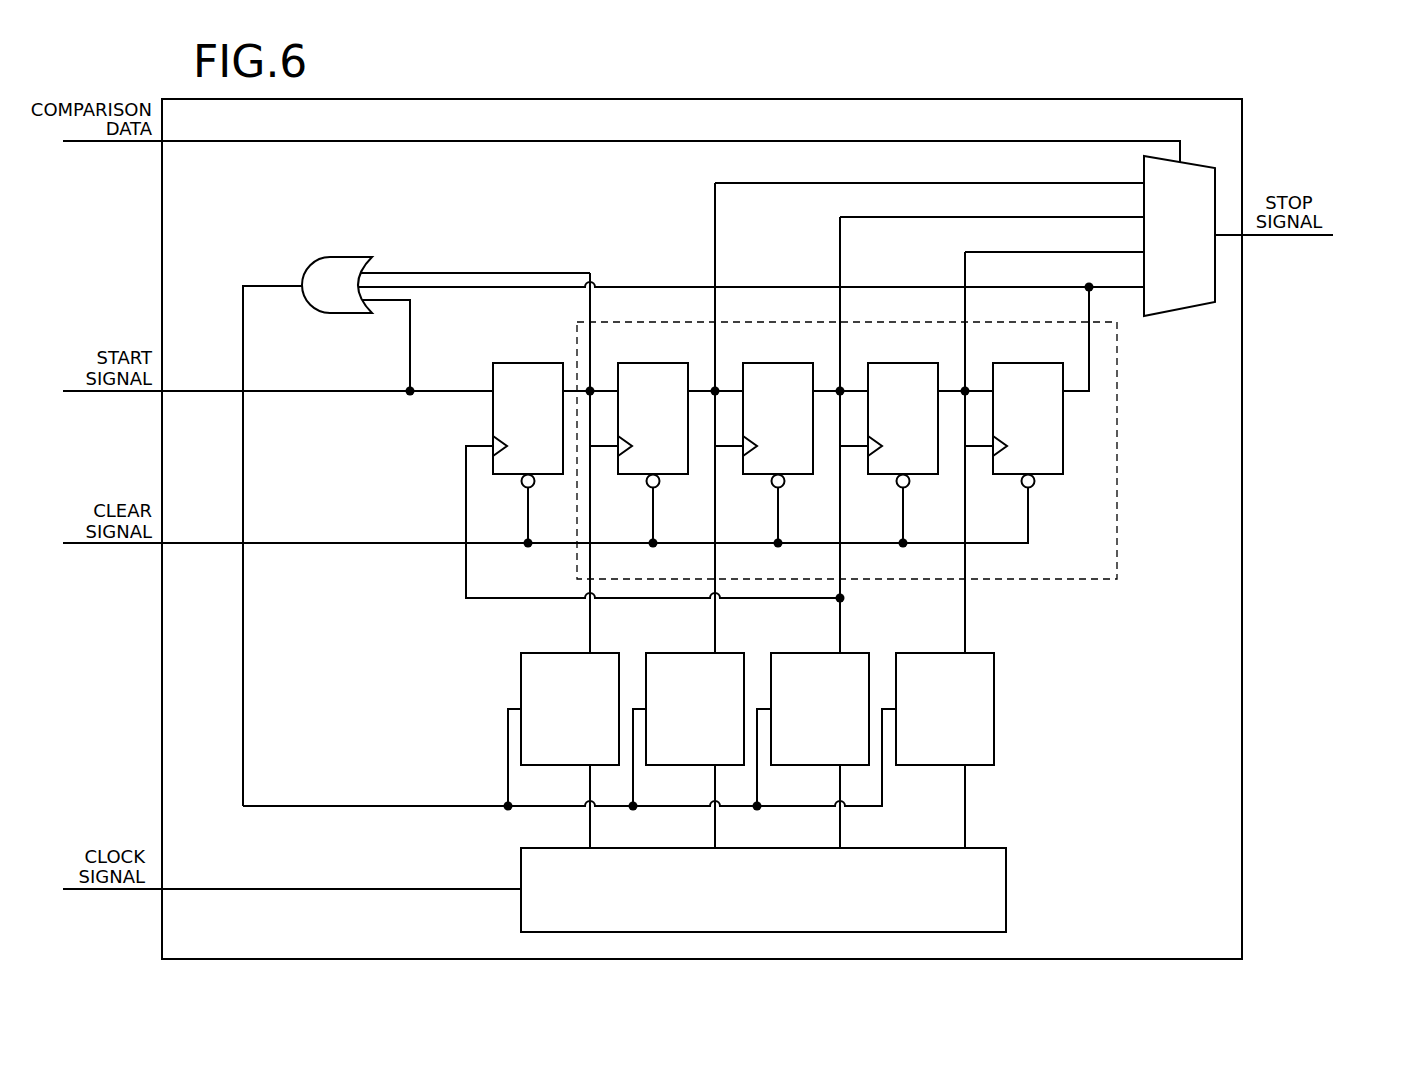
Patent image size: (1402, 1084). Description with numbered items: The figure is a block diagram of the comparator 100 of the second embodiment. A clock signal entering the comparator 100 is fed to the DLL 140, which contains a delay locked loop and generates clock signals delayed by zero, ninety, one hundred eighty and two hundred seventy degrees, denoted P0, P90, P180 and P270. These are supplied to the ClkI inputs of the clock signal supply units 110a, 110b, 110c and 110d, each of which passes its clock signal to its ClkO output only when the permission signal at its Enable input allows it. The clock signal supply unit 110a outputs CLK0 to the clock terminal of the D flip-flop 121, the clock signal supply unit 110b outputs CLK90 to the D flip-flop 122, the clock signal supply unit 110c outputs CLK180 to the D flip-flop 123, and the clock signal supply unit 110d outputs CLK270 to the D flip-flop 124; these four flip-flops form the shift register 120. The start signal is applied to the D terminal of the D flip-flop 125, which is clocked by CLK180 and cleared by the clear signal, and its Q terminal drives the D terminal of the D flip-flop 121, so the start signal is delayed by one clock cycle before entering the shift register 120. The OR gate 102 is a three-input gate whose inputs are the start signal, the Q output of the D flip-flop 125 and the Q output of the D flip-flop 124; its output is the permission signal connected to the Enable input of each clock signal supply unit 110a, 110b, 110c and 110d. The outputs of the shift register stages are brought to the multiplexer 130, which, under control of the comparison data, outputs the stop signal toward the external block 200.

The comparator 100 is at (753, 99).
The OR gate 102 is at (349, 257).
The clock signal supply unit 110a is at (569, 766).
The clock signal supply unit 110b is at (694, 766).
The clock signal supply unit 110c is at (819, 766).
The clock signal supply unit 110d is at (944, 766).
The shift register 120 is at (1074, 581).
The D flip-flop 121 is at (642, 362).
The D flip-flop 122 is at (767, 362).
The D flip-flop 123 is at (892, 362).
The D flip-flop 124 is at (1017, 362).
The D flip-flop 125 is at (517, 362).
The multiplexer 130 is at (1175, 316).
The DLL 140 is at (989, 848).
The stop signal destination 200 is at (1300, 235).